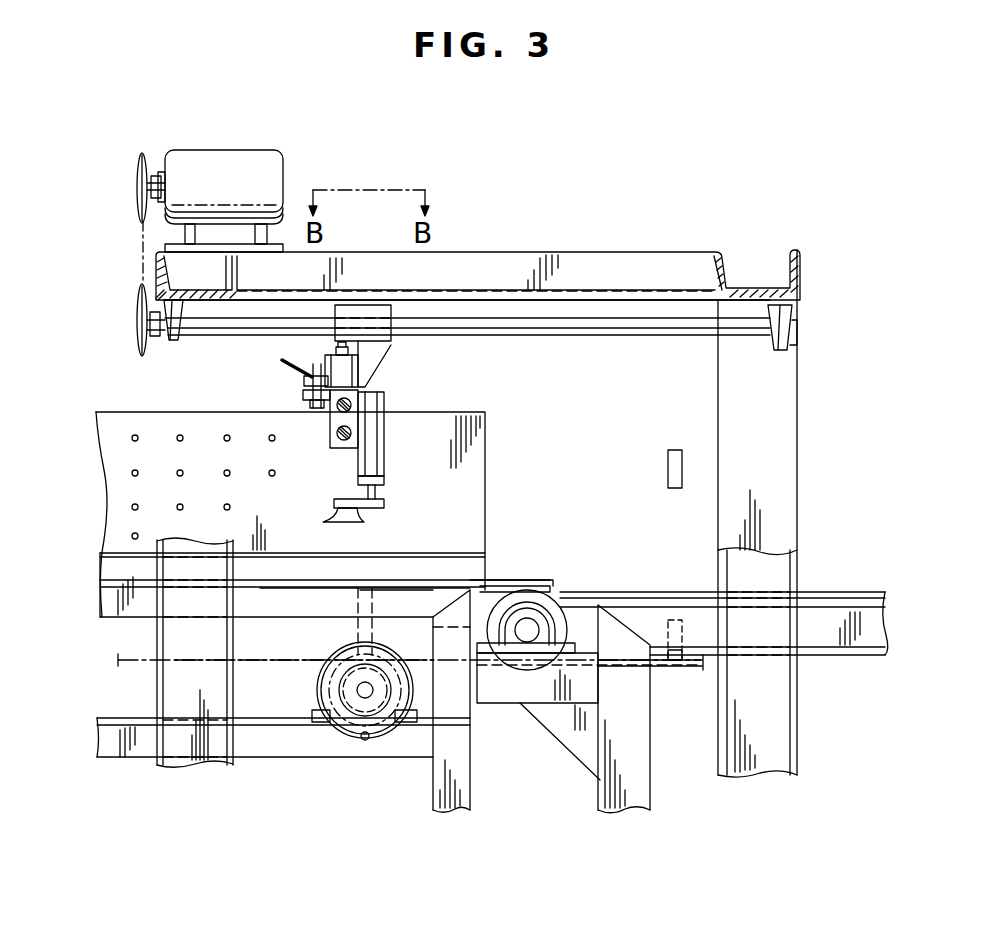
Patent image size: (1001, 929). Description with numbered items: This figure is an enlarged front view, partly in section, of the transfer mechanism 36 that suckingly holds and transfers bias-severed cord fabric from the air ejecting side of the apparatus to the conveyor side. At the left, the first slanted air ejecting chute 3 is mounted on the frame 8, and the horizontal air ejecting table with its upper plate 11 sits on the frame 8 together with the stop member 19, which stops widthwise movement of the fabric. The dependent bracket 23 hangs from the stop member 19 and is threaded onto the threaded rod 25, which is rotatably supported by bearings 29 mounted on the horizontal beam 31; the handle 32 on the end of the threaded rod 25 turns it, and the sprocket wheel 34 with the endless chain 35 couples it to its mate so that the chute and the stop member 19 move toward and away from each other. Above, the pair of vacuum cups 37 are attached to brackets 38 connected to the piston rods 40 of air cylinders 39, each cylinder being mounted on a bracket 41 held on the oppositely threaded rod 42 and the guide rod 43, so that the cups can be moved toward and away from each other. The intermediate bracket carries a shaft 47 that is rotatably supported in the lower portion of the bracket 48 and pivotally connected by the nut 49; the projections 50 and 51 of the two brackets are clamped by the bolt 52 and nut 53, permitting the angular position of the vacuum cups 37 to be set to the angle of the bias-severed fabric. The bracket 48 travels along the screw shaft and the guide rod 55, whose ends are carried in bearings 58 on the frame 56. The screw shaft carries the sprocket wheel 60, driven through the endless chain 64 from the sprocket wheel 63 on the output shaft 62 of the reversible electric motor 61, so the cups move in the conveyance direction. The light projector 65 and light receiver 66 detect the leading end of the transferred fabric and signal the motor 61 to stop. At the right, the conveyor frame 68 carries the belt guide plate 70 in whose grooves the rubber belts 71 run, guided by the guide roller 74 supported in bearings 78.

The first slanted air ejecting chute 3 is at (124, 410).
The frame 8 is at (470, 776).
The upper plate 11 is at (548, 584).
The stop member 19 is at (100, 570).
The dependent bracket 23 is at (374, 636).
The threaded rod 25 is at (373, 690).
The bearings 29 is at (316, 710).
The horizontal beam 31 is at (270, 748).
The handle 32 is at (368, 740).
The sprocket wheel 34 is at (320, 662).
The endless chain 35 is at (245, 660).
The transfer mechanism 36 is at (570, 252).
The vacuum cups 37 is at (348, 523).
The bracket 38 is at (384, 506).
The air cylinder 39 is at (385, 440).
The piston rod 40 is at (378, 490).
The bracket 41 is at (332, 425).
The oppositely threaded rod 42 is at (351, 406).
The guide rod 43 is at (341, 441).
The shaft 47 is at (370, 372).
The bracket 48 is at (392, 355).
The nut 49 is at (334, 352).
The projection 50 is at (303, 394).
The projection 51 is at (304, 380).
The bolt 52 is at (318, 408).
The nut 53 is at (284, 361).
The guide rod 55 is at (633, 336).
The frame 56 is at (797, 520).
The bearings 58 is at (172, 341).
The sprocket wheel 60 is at (138, 324).
The reversible electric motor 61 is at (232, 160).
The output shaft 62 is at (160, 180).
The sprocket wheel 63 is at (138, 176).
The endless chain 64 is at (140, 246).
The light projector 65 is at (668, 466).
The light receiver 66 is at (678, 665).
The conveyor frame 68 is at (652, 782).
The belt guide plate 70 is at (541, 613).
The rubber belts 71 is at (512, 598).
The guide roller 74 is at (540, 615).
The bearings 78 is at (518, 650).